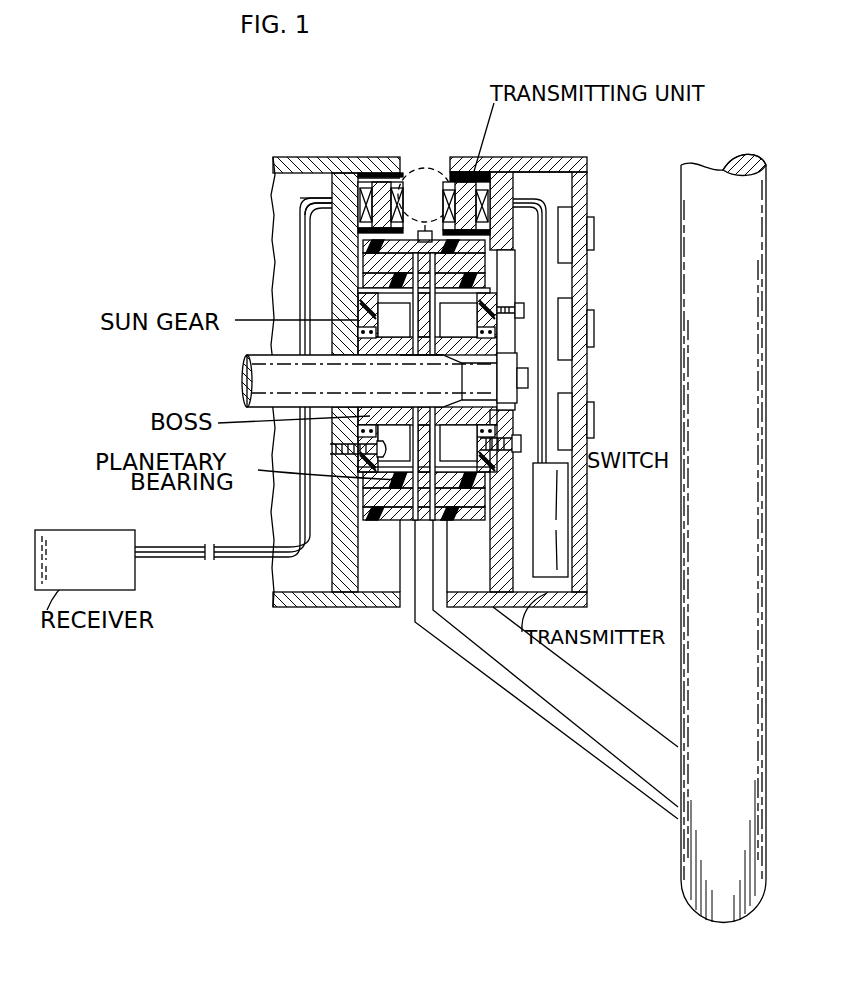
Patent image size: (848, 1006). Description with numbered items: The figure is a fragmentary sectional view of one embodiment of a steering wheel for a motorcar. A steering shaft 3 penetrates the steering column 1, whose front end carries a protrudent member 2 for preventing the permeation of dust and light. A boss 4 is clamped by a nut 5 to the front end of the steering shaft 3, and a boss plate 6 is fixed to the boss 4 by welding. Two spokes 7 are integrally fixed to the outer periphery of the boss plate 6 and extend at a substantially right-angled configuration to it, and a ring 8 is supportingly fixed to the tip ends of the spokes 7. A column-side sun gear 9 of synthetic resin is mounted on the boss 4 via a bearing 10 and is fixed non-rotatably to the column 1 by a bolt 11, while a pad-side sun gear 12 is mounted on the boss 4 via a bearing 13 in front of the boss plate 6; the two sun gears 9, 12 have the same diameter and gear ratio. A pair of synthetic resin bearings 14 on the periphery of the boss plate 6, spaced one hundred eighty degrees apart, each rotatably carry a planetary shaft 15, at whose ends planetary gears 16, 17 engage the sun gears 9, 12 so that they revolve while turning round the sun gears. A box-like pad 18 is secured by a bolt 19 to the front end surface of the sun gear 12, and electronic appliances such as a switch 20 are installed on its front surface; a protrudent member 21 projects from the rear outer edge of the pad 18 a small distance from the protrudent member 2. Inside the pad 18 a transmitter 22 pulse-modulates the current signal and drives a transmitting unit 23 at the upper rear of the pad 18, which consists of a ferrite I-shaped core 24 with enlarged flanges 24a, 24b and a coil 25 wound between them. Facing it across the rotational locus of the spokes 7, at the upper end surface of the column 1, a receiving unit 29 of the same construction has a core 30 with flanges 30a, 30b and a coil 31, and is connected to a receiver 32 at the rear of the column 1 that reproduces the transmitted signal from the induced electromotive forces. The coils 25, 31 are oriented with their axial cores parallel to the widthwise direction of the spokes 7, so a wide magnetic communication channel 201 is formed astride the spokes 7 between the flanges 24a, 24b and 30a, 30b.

The steering column 1 is at (292, 157).
The protrudent member 2 is at (403, 170).
The steering shaft 3 is at (244, 379).
The boss 4 is at (403, 356).
The nut 5 is at (514, 400).
The boss plate 6 is at (400, 393).
The spokes 7 is at (538, 700).
The ring 8 is at (680, 560).
The sun gear 9 is at (358, 318).
The bearing 10 is at (360, 333).
The bolt 11 is at (332, 450).
The sun gear 12 is at (500, 297).
The bearing 13 is at (478, 350).
The bearings 14 is at (437, 303).
The planetary shaft 15 is at (487, 265).
The planetary gear 16 is at (363, 243).
The planetary gear 17 is at (490, 247).
The pad 18 is at (580, 185).
The bolt 19 is at (522, 318).
The switch 20 is at (597, 253).
The protrudent member 21 is at (452, 160).
The transmitter 22 is at (568, 515).
The transmitting unit 23 is at (488, 182).
The core 24 is at (512, 168).
The flange 24a is at (472, 172).
The flange 24b is at (572, 214).
The coil 25 is at (529, 319).
The receiving unit 29 is at (384, 176).
The core 30 is at (358, 226).
The flange 30a is at (368, 180).
The flange 30b is at (356, 222).
The coil 31 is at (360, 205).
The receiver 32 is at (120, 531).
The magnetic communication channel 201 is at (425, 205).